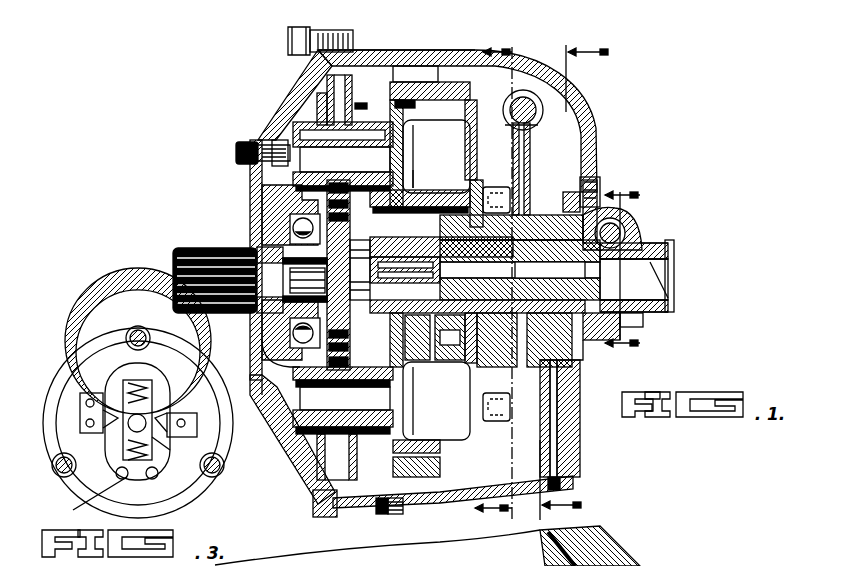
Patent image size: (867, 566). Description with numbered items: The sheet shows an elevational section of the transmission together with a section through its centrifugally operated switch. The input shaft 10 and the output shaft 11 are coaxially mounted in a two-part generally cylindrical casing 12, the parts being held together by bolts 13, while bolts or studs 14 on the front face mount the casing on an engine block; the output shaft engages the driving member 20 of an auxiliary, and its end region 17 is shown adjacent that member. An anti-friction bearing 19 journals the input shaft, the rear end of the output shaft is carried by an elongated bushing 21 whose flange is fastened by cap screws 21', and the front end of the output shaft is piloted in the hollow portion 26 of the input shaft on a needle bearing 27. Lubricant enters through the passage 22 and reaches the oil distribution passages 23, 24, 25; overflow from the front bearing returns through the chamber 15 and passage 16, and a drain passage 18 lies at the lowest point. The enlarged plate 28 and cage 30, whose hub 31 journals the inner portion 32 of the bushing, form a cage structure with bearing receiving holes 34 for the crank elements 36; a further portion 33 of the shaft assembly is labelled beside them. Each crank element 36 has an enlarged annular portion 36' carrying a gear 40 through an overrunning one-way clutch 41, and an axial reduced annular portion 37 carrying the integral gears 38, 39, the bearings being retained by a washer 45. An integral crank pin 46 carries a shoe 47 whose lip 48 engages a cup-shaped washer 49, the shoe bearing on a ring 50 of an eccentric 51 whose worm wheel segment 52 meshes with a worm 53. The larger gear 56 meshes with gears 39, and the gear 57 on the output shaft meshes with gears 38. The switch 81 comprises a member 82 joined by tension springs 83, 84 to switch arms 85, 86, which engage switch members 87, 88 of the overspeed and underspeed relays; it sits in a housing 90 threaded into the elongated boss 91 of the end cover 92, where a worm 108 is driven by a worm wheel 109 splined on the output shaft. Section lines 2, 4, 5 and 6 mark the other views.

In FIG. 1, the section line 2- 2 is at (634, 270).
In FIG. 1, the section line 4- 4 is at (563, 281).
In FIG. 1, the section line 5- 5 is at (485, 280).
In FIG. 1, the clutch plate 6 is at (395, 92).
In FIG. 1, the input shaft 10 is at (222, 248).
In FIG. 1, the output shaft 11 is at (674, 265).
In FIG. 1, the casing 12 is at (435, 66).
In FIG. 1, the bolts 13 is at (353, 40).
In FIG. 1, the bolts or studs 14 is at (244, 148).
In FIG. 1, the chamber 15 is at (257, 322).
In FIG. 1, the passage 16 is at (262, 350).
In FIG. 1, the output shaft flange 17 is at (650, 246).
In FIG. 1, the drain passage 18 is at (393, 512).
In FIG. 1, the anti-friction bearing 19 is at (292, 225).
In FIG. 1, the driving member 20 is at (665, 252).
In FIG. 1, the elongated bushing 21 is at (613, 350).
In FIG. 1, the cap screws 21' is at (598, 187).
In FIG. 1, the passage 22 is at (560, 452).
In FIG. 1, the oil distribution passage 23 is at (553, 318).
In FIG. 1, the oil distribution passage 24 is at (566, 288).
In FIG. 1, the oil distribution passage 25 is at (477, 285).
In FIG. 1, the hollow portion 26 is at (286, 262).
In FIG. 1, the needle bearing 27 is at (290, 320).
In FIG. 1, the enlarged plate 28 is at (317, 447).
In FIG. 1, the cage 30 is at (455, 95).
In FIG. 1, the hub 31 is at (433, 376).
In FIG. 1, the inner portion 32 is at (441, 254).
In FIG. 1, the shaft key 33 is at (408, 279).
In FIG. 1, the bearing receiving hole 34 is at (470, 345).
In FIG. 1, the crank element 36 is at (433, 153).
In FIG. 1, the enlarged annular portion 36' is at (437, 182).
In FIG. 1, the axial reduced annular portion 37 is at (355, 150).
In FIG. 1, the gear 38 is at (352, 86).
In FIG. 1, the gear 39 is at (390, 112).
In FIG. 1, the gear 40 is at (450, 52).
In FIG. 1, the overrunning one-way clutch 41 is at (420, 190).
In FIG. 1, the washer 45 is at (393, 456).
In FIG. 1, the crank pin 46 is at (493, 187).
In FIG. 1, the shoe 47 is at (511, 227).
In FIG. 1, the lip 48 is at (548, 246).
In FIG. 1, the cup-shaped washer 49 is at (550, 268).
In FIG. 1, the ring 50 is at (483, 404).
In FIG. 1, the eccentric 51 is at (427, 415).
In FIG. 1, the worm wheel segment 52 is at (530, 160).
In FIG. 1, the worm 53 is at (545, 105).
In FIG. 1, the larger gear 56 is at (345, 218).
In FIG. 1, the gear 57 is at (378, 282).
In FIG. 3, the centrifugally operated switch 81 is at (97, 360).
In FIG. 3, the member 82 is at (170, 412).
In FIG. 3, the tension spring 83 is at (112, 372).
In FIG. 3, the tension spring 84 is at (99, 466).
In FIG. 3, the switch arm 85 is at (165, 385).
In FIG. 3, the switch arm 86 is at (185, 480).
In FIG. 3, the switch member 87 is at (85, 410).
In FIG. 3, the switch member 88 is at (185, 442).
In FIG. 1, the housing 90 is at (453, 546).
In FIG. 1, the elongated boss 91 is at (625, 222).
In FIG. 1, the end cover 92 is at (600, 352).
In FIG. 1, the worm 108 is at (634, 269).
In FIG. 1, the worm wheel 109 is at (634, 292).